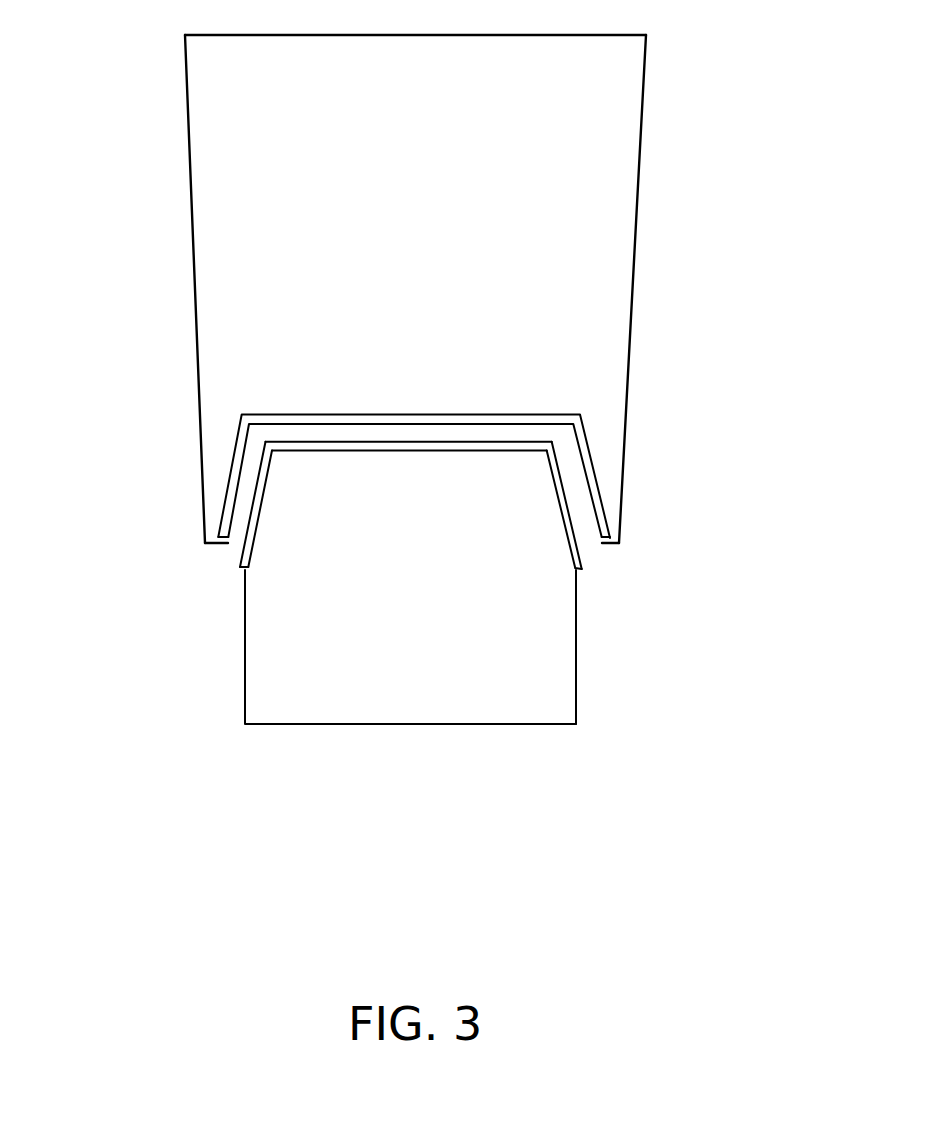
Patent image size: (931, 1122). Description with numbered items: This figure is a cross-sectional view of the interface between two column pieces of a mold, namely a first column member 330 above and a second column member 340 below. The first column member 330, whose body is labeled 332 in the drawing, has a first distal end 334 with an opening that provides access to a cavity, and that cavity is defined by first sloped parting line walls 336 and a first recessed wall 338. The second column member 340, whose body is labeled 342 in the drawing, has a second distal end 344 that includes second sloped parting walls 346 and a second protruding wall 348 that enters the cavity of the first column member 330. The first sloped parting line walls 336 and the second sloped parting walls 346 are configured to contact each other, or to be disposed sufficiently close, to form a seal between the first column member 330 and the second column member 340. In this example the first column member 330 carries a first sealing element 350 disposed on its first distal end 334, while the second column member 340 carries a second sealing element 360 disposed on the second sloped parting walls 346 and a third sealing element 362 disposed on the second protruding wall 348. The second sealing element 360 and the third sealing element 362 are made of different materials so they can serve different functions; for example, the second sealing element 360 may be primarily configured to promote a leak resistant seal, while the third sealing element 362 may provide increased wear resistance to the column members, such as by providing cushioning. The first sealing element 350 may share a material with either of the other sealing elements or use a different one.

The first column member 330 is at (411, 302).
The top wall of housing 332 is at (252, 185).
The first distal end 334 is at (607, 547).
The first sloped parting line walls 336 is at (228, 480).
The first recessed wall 338 is at (443, 474).
The second column member 340 is at (397, 658).
The base body 342 is at (313, 649).
The second distal end 344 is at (503, 445).
The second sloped parting walls 346 is at (266, 494).
The second protruding wall 348 is at (416, 435).
The first sealing element 350 is at (313, 435).
The second sealing element 360 is at (258, 455).
The third sealing element 362 is at (528, 448).